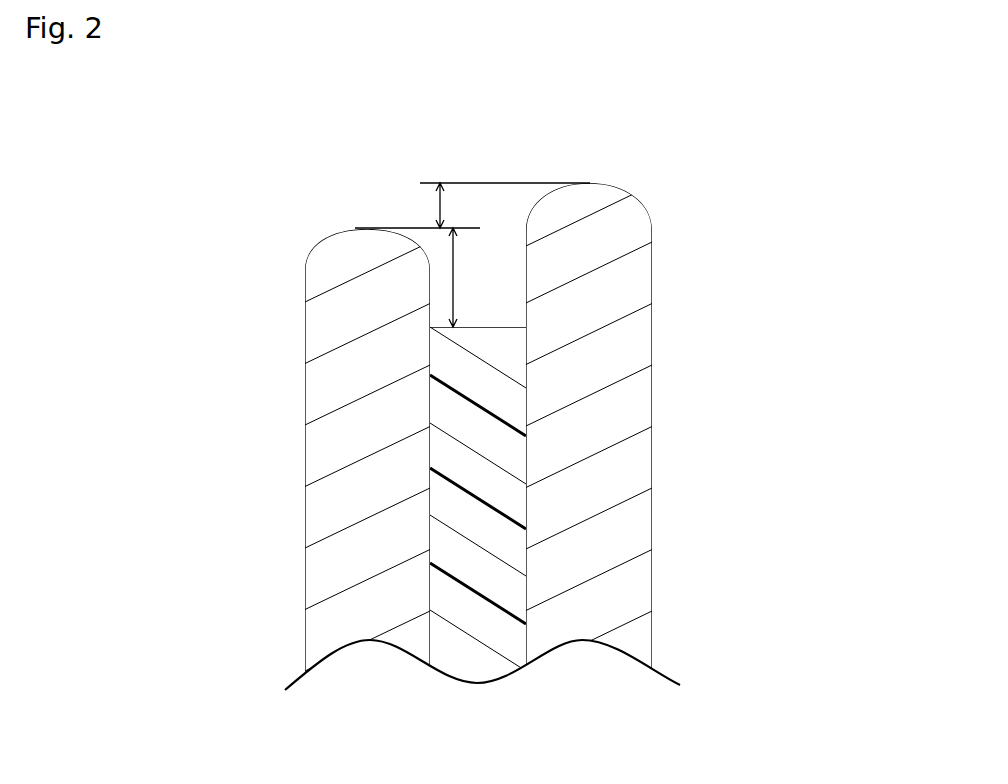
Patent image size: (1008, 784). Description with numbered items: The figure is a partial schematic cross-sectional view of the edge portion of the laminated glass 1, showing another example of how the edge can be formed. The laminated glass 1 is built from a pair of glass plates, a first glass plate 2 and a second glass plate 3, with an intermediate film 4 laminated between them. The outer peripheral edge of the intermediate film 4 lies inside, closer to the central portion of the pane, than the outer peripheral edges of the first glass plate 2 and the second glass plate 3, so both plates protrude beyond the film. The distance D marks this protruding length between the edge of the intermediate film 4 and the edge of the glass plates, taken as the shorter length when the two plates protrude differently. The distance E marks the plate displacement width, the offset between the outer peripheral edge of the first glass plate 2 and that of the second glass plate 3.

The laminated glass 1 is at (495, 92).
The first glass plate 2 is at (333, 327).
The second glass plate 3 is at (618, 353).
The intermediate film 4 is at (492, 532).